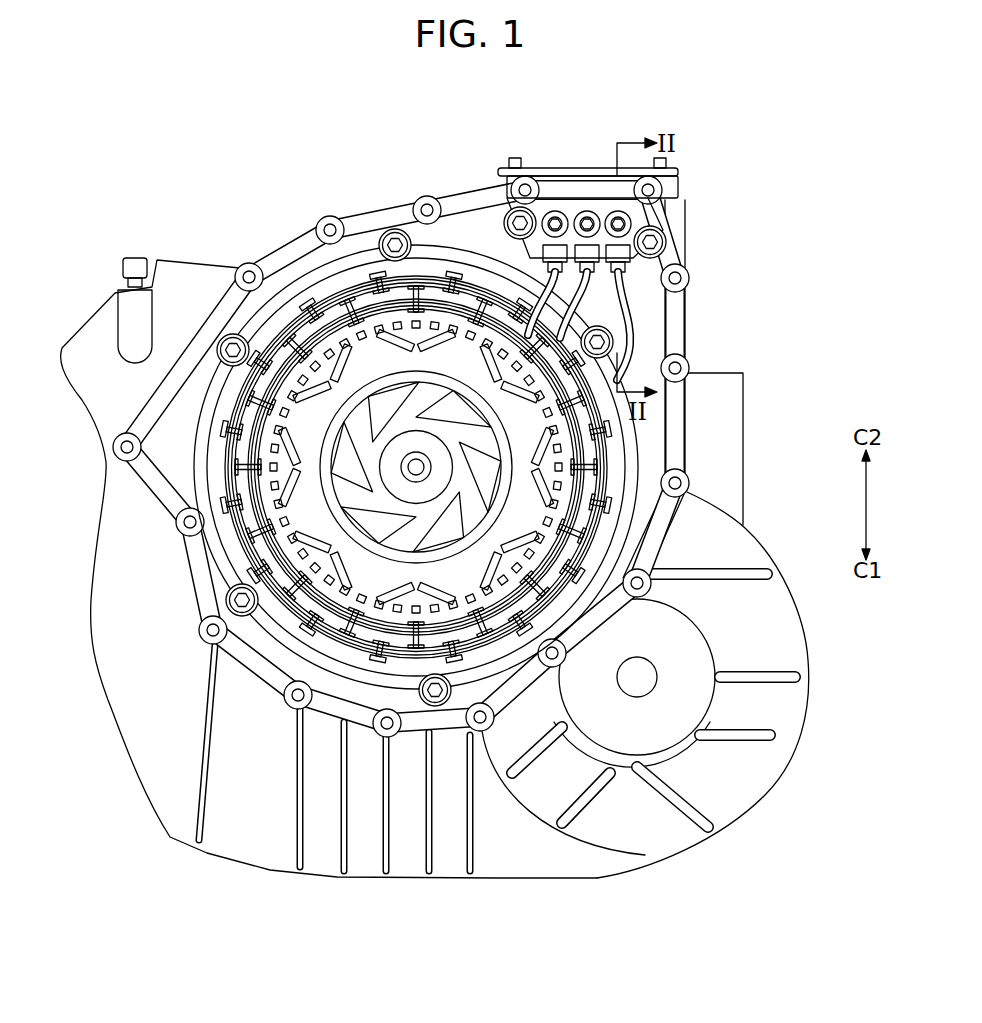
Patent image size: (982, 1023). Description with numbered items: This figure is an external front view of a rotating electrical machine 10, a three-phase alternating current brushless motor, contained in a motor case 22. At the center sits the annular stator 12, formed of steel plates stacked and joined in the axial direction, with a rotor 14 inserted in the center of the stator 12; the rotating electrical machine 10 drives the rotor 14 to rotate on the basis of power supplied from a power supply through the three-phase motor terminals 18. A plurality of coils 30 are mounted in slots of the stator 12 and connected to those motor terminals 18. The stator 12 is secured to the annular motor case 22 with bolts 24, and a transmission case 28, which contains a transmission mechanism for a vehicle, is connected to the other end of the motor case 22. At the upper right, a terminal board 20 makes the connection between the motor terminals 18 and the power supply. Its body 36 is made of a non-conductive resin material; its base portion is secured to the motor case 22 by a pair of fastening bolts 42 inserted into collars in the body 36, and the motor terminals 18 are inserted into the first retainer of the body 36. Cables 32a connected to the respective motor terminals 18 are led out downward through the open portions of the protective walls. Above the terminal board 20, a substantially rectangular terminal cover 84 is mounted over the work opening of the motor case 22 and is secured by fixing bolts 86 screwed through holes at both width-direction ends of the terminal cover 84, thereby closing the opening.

The rotating electrical machine 10 is at (402, 76).
The stator 12 is at (656, 432).
The rotor 14 is at (305, 497).
The motor terminals 18 is at (624, 234).
The terminal board 20 is at (636, 217).
The motor case 22 is at (362, 242).
The bolts 24 is at (233, 338).
The transmission case 28 is at (150, 708).
The coils 30 is at (243, 547).
The cables 32a is at (634, 337).
The body 36 is at (604, 206).
The fastening bolts 42 is at (516, 228).
The terminal cover 84 is at (543, 168).
The fixing bolts 86 is at (510, 160).